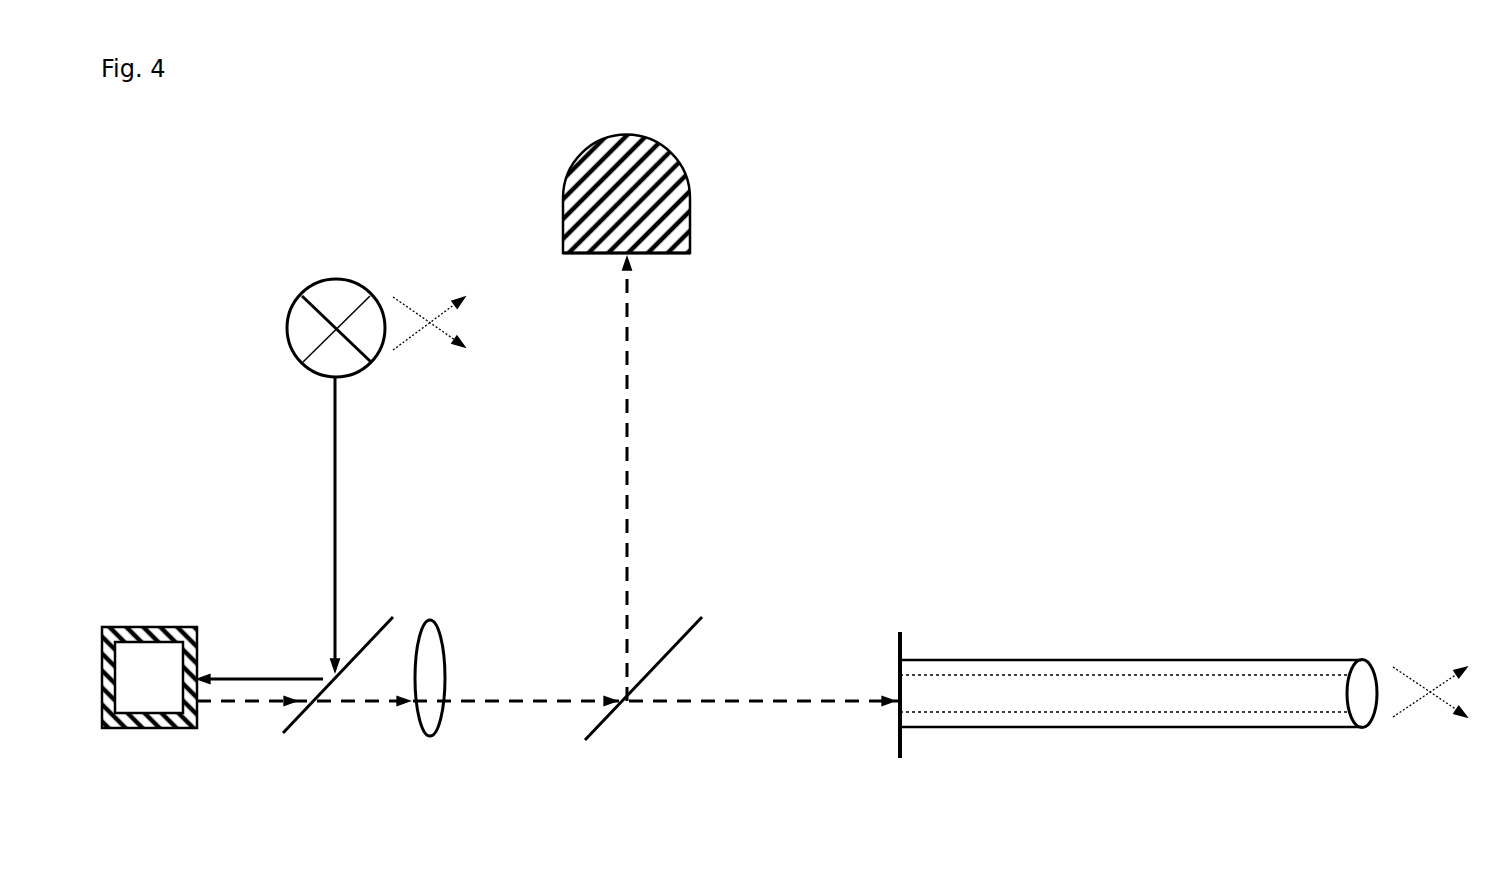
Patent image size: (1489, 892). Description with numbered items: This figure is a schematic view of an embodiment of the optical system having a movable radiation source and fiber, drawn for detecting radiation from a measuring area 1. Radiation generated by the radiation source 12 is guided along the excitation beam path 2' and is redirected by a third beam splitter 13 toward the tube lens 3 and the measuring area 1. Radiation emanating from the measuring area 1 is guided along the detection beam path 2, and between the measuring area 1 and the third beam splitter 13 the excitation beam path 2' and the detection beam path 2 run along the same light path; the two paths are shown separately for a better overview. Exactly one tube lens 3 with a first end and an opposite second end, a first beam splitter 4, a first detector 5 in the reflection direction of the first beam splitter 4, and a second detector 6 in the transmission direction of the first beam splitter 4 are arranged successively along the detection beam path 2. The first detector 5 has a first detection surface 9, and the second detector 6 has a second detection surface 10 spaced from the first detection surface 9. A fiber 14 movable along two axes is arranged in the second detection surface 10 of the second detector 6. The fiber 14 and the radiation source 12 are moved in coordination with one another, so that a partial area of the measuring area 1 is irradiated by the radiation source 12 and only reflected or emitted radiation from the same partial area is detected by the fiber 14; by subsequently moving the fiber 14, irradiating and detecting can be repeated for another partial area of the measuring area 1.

The measuring area 1 is at (149, 620).
The detection beam path 2 is at (547, 526).
The excitation beam path 2' is at (288, 524).
The tube lens 3 is at (412, 623).
The first beam splitter 4 is at (604, 738).
The first detector 5 is at (703, 188).
The second detector 6 is at (1225, 742).
The first detection surface 9 is at (677, 270).
The second detection surface 10 is at (887, 734).
The radiation source 12 is at (290, 291).
The third beam splitter 13 is at (294, 740).
The fiber 14 is at (1225, 742).